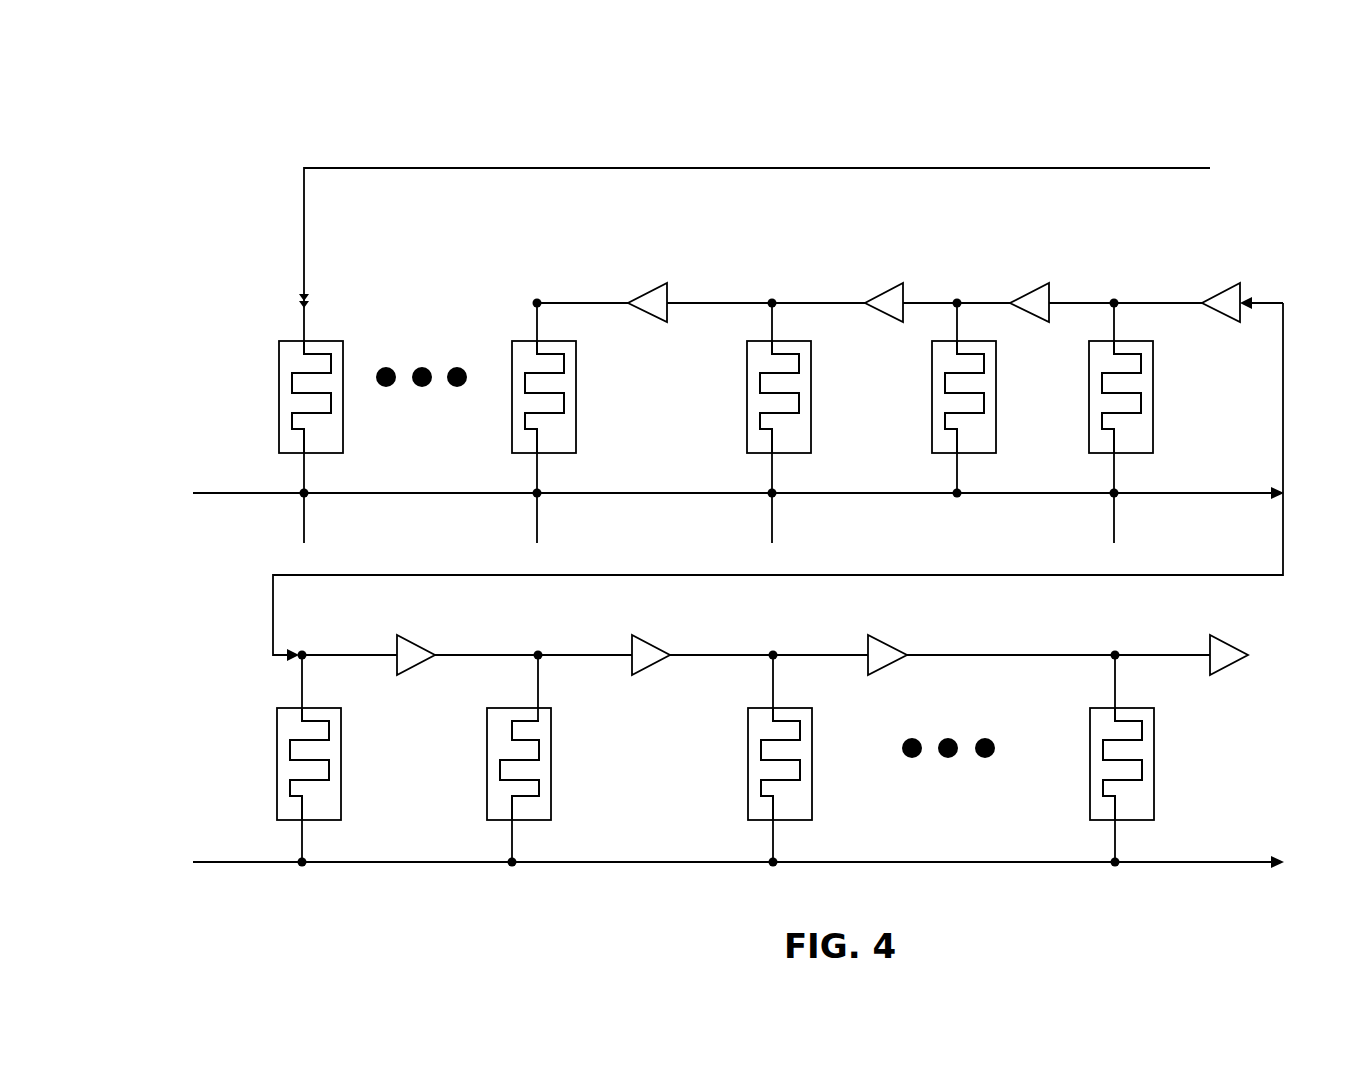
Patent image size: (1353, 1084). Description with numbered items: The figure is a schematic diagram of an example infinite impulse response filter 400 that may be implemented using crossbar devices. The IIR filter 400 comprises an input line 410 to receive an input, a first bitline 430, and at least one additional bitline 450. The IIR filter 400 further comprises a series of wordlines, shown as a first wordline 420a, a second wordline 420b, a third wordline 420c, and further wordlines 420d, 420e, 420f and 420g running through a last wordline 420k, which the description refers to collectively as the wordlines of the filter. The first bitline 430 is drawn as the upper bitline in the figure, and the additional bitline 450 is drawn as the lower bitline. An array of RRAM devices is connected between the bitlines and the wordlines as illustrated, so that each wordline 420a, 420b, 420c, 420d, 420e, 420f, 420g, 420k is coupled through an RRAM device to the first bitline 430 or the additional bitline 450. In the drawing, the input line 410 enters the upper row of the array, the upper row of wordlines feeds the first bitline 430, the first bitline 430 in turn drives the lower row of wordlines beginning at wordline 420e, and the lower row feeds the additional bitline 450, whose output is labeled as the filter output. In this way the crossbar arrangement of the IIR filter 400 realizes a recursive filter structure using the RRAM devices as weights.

The infinite impulse response (IIR) filter 400 is at (205, 127).
The input line 410 is at (789, 241).
The wordline WL(1) 420a is at (526, 381).
The wordline WL(2) 420b is at (761, 381).
The wordline WL(3) 420c is at (946, 356).
The wordline 420d is at (1103, 381).
The wordline 420e is at (291, 721).
The wordline 420f is at (509, 721).
The wordline 420g is at (761, 721).
The wordline WL(k) 420k is at (1103, 721).
The bit line 430 is at (719, 493).
The additional bitline BL(j) 450 is at (719, 869).